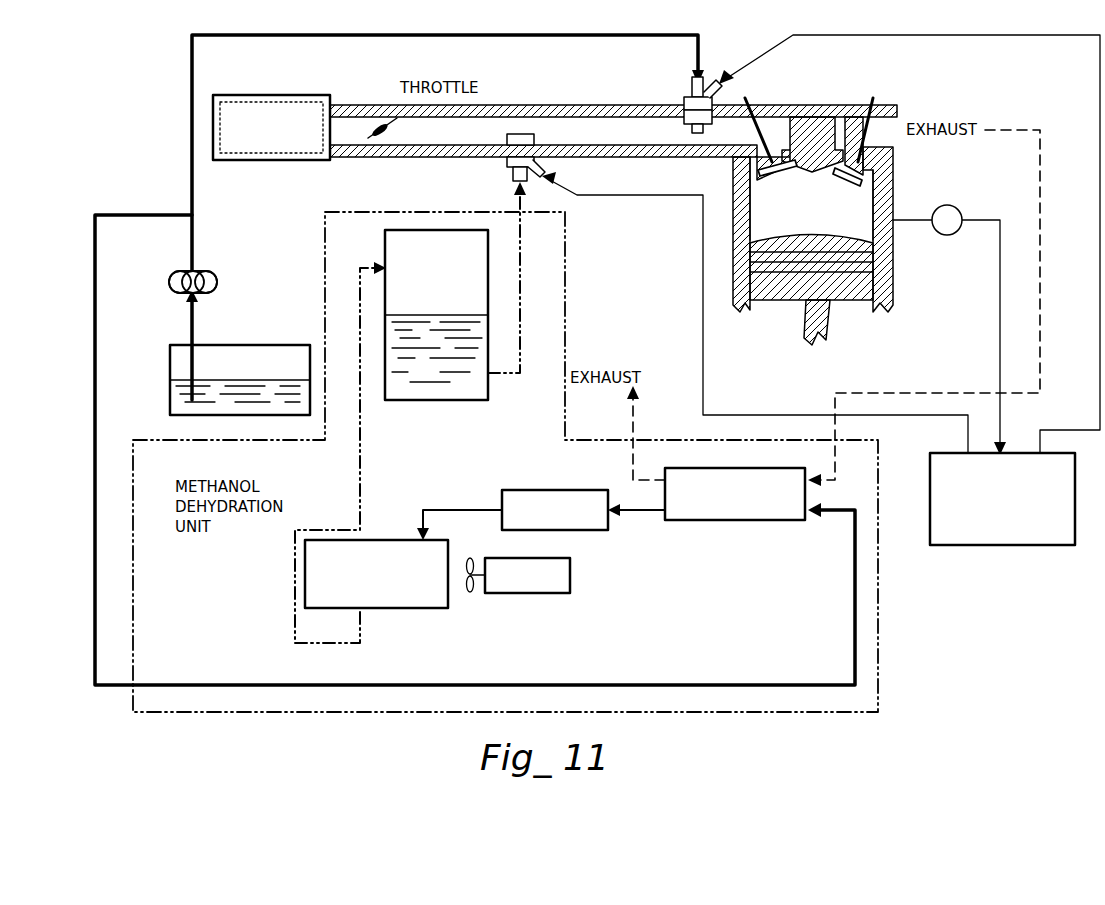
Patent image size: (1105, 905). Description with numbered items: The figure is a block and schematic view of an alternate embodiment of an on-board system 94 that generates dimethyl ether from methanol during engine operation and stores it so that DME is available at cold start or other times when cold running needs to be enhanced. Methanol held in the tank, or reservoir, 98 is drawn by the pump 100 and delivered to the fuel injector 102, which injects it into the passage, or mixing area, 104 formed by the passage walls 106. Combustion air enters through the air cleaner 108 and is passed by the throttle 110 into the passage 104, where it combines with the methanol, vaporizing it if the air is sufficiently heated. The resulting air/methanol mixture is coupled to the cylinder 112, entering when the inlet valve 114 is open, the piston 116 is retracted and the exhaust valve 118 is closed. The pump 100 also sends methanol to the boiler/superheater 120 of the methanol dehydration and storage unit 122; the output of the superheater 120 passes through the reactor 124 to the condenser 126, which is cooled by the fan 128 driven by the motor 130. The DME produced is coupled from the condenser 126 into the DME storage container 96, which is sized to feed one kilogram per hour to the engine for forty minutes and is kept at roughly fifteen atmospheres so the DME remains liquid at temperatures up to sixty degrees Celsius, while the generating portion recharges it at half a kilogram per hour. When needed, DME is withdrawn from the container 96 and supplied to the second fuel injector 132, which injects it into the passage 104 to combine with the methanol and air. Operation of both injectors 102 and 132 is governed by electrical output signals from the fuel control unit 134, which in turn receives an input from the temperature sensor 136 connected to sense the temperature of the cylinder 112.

The on-board DME generating and storage system 94 is at (908, 638).
The DME storage container 96 is at (488, 399).
The methanol tank 98 is at (254, 345).
The pump 100 is at (178, 276).
The fuel injector 102 is at (688, 96).
The passage 104 is at (682, 140).
The passage walls 106 is at (582, 104).
The air cleaner 108 is at (290, 161).
The throttle 110 is at (392, 134).
The cylinder 112 is at (893, 192).
The inlet valve 114 is at (772, 108).
The piston 116 is at (810, 304).
The exhaust valve 118 is at (852, 110).
The boiler/superheater 120 is at (760, 522).
The methanol dehydration and storage unit 122 is at (878, 560).
The reactor 124 is at (541, 490).
The condenser 126 is at (405, 610).
The fan 128 is at (470, 593).
The motor 130 is at (540, 594).
The fuel injector 132 is at (508, 158).
The fuel control unit 134 is at (1050, 546).
The temperature sensor 136 is at (942, 236).